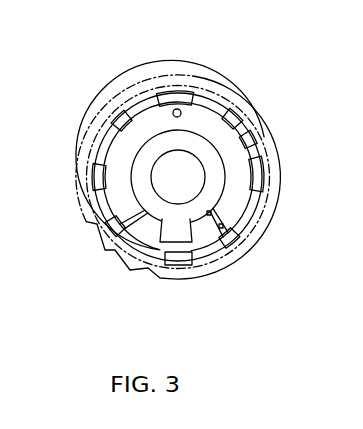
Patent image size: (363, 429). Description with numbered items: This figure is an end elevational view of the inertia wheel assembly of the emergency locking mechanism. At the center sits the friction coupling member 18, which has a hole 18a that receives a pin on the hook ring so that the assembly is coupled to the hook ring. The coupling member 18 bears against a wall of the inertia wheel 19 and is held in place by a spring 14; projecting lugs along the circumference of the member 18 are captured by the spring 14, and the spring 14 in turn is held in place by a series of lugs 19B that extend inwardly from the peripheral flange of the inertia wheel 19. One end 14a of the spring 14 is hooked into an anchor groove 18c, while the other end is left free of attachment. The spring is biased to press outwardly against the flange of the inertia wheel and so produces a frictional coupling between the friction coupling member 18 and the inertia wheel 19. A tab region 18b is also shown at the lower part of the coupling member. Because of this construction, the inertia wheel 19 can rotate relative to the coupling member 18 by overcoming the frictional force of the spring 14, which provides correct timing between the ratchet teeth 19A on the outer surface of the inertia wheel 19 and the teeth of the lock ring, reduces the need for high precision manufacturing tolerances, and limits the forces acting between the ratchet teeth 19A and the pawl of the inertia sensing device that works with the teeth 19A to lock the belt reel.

The spring 14 is at (212, 92).
The end of the spring 14a is at (213, 208).
The friction coupling member 18 is at (243, 215).
The hole 18a is at (177, 109).
The ring tab 18b is at (194, 250).
The anchor groove 18c is at (219, 214).
The inertia wheel 19 is at (86, 234).
The ratchet teeth 19A is at (123, 265).
The lugs 19B is at (119, 118).